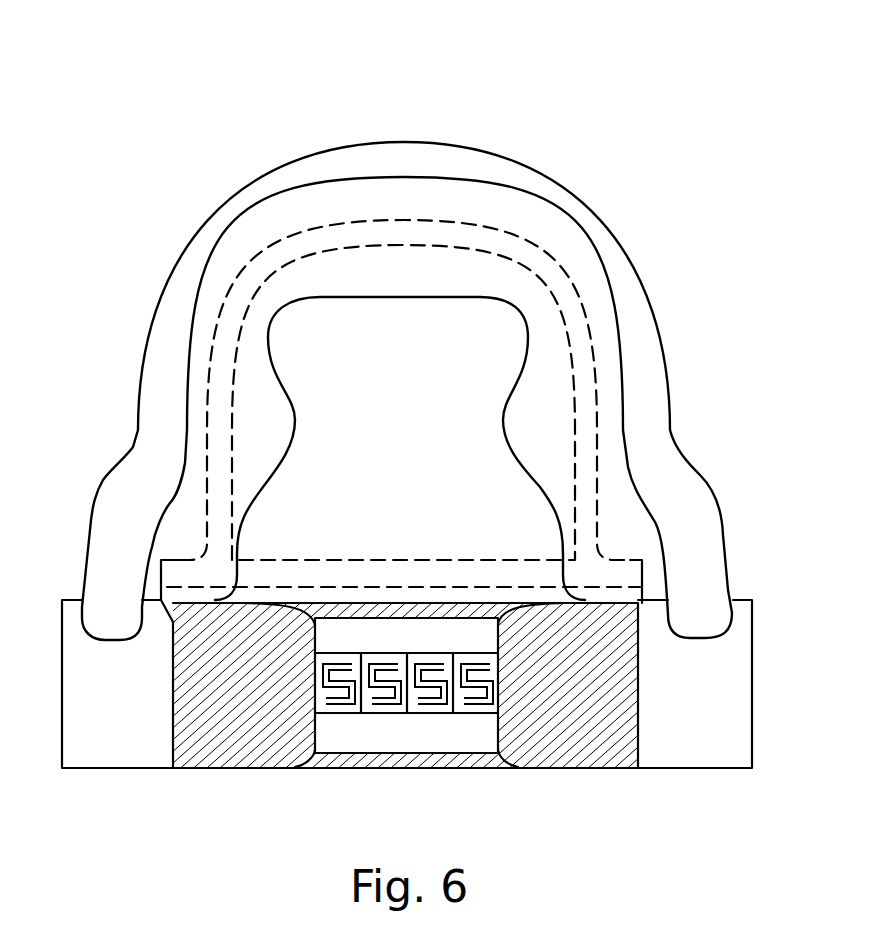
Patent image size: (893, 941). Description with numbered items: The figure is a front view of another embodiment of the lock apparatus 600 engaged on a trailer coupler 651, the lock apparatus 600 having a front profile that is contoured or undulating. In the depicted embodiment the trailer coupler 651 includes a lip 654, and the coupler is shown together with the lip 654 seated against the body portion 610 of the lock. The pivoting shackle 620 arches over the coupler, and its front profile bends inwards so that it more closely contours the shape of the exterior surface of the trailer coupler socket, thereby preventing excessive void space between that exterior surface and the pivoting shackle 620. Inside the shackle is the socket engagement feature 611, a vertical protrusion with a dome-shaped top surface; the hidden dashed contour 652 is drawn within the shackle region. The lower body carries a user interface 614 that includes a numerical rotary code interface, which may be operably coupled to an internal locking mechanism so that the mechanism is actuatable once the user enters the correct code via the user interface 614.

The lock apparatus 600 is at (99, 59).
The pivoting shackle 620 is at (673, 217).
The socket engagement feature 611 is at (512, 358).
The cable 652 is at (228, 452).
The lip 654 is at (168, 573).
The trailer coupler 651 is at (288, 578).
The lock body 610 is at (527, 750).
The user interface 614 is at (410, 730).